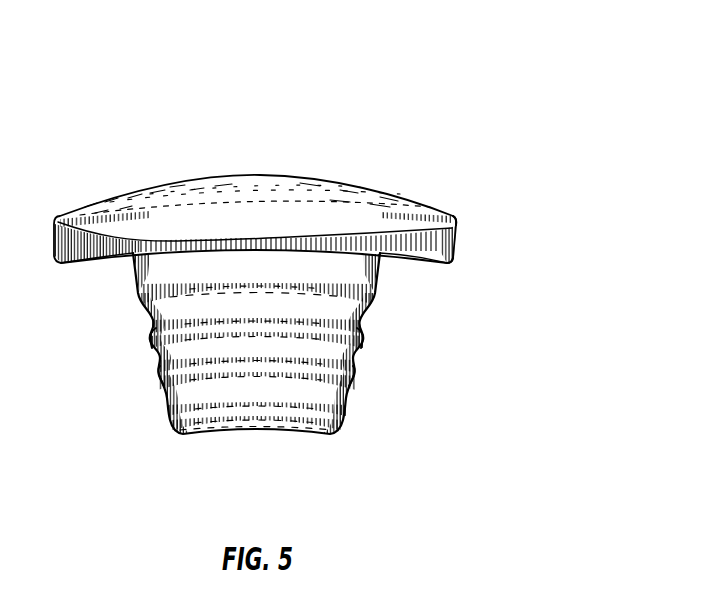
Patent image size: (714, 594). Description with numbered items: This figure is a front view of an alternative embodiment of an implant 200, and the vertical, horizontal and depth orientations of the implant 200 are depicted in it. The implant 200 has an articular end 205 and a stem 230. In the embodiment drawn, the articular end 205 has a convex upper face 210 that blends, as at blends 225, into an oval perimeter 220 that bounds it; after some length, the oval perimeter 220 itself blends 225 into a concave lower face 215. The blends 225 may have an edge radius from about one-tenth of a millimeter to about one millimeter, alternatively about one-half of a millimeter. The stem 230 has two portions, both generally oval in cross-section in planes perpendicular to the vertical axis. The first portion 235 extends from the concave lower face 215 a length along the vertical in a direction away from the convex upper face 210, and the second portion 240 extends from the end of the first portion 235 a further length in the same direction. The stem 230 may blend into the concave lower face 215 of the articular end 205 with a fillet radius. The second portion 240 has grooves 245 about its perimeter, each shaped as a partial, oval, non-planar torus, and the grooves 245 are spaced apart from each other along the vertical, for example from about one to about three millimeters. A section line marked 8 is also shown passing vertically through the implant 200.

The implant 200 is at (347, 90).
The articular end 205 is at (54, 222).
The convex upper face 210 is at (356, 186).
The concave lower face 215 is at (430, 276).
The oval perimeter 220 is at (461, 242).
The blends 225 is at (463, 211).
The stem 230 is at (122, 450).
The first portion 235 is at (381, 292).
The second portion 240 is at (136, 294).
The grooves 245 is at (361, 359).
The section line 8- 8 is at (253, 170).